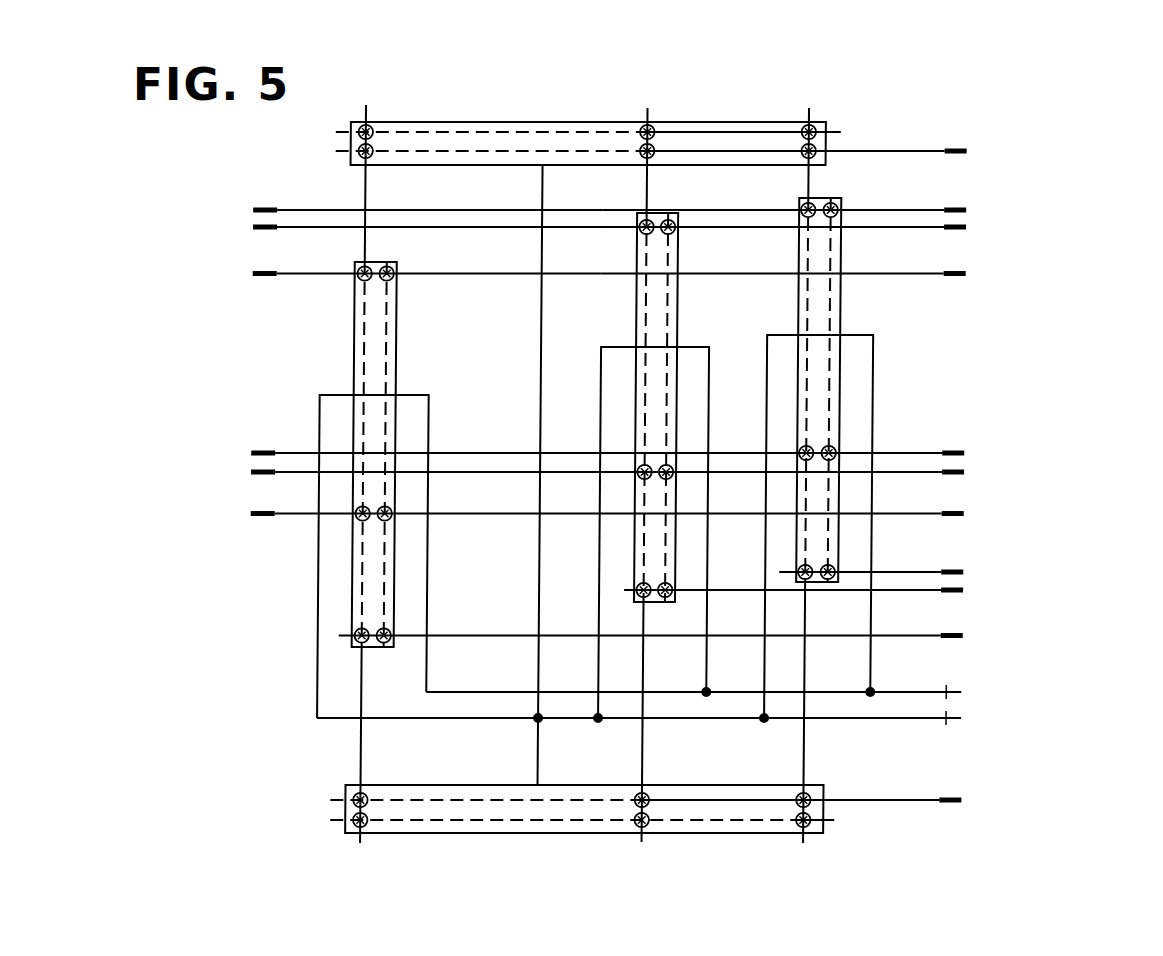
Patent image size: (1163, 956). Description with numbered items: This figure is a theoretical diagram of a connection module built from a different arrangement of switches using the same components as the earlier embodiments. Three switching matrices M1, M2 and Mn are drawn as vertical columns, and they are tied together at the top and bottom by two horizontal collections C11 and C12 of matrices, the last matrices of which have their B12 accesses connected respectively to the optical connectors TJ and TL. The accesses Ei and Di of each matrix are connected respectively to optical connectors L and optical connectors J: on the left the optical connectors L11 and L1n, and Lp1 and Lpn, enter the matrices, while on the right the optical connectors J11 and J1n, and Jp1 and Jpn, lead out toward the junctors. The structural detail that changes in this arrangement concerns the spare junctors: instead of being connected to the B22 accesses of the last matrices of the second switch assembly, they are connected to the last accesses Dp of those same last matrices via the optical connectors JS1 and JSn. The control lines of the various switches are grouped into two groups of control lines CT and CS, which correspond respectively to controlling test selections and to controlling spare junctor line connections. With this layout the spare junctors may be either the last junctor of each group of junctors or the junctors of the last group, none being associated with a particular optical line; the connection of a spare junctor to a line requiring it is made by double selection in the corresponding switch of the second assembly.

The collection of matrices C11 is at (515, 142).
The collection of matrices C12 is at (505, 810).
The optical connector TJ is at (964, 151).
The optical connector TL is at (962, 800).
The optical connector L L11 is at (251, 210).
The optical connector L L1n is at (251, 274).
The optical connector J J11 is at (964, 213).
The optical connector J J1n is at (964, 274).
The optical connector L Lp1 is at (250, 453).
The optical connector L Lpn is at (251, 514).
The optical connector J Jp1 is at (964, 452).
The optical connector J Jpn is at (964, 514).
The optical connector JS JS1 is at (964, 572).
The optical connector JS JSn is at (964, 636).
The group of control lines CS is at (963, 692).
The group of control lines CT is at (963, 718).
The matrix Mn is at (372, 328).
The matrix M2 is at (650, 328).
The matrix M1 is at (822, 323).